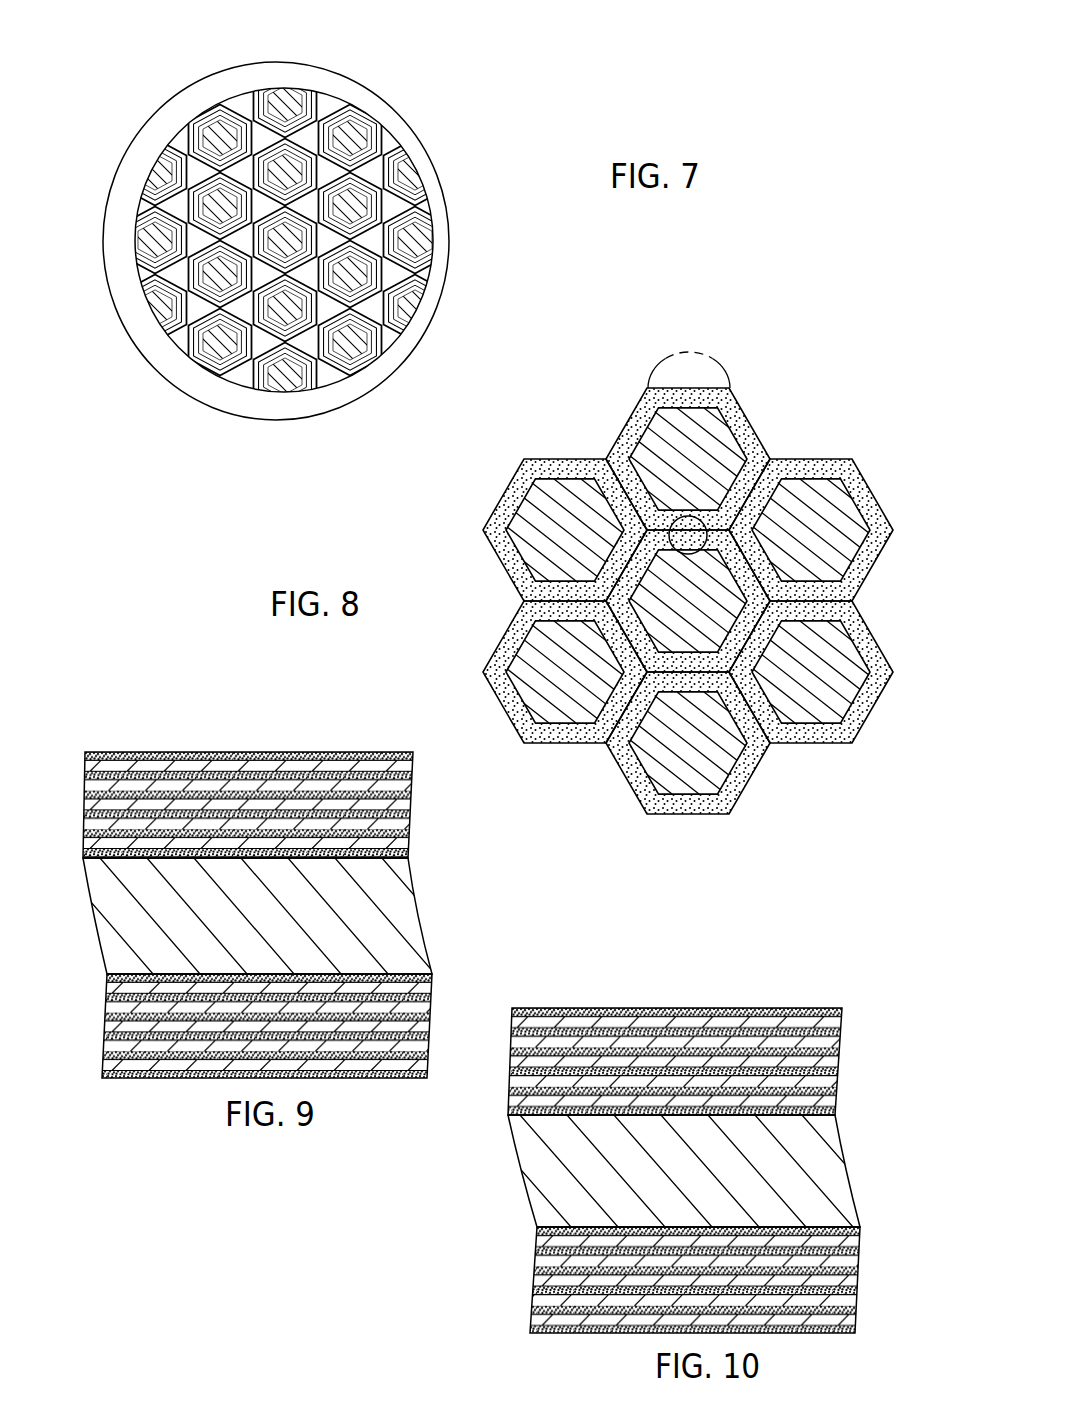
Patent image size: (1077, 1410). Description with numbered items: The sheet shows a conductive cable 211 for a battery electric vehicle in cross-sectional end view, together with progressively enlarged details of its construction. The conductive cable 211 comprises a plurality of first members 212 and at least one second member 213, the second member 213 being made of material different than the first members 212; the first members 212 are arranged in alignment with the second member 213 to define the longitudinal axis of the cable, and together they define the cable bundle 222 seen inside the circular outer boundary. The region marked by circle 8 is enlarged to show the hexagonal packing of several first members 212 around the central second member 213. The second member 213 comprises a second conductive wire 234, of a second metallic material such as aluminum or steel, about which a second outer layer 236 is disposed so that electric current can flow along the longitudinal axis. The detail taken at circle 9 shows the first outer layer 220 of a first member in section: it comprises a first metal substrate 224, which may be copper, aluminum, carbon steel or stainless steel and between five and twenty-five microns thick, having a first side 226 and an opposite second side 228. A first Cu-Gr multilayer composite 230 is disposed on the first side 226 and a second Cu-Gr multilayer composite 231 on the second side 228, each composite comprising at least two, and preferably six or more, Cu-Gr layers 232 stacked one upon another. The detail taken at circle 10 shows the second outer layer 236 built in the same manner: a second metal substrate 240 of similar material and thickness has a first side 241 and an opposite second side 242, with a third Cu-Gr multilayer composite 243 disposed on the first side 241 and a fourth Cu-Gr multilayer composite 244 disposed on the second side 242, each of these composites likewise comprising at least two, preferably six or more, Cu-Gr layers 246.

In FIG. 7, the conductive cable 211 is at (133, 98).
In FIG. 7, the second conductive wire 234 is at (296, 80).
In FIG. 7, the circle 8 is at (339, 95).
In FIG. 7, the cable bundle 222 is at (435, 230).
In FIG. 8, the cable bundle 222 is at (560, 398).
In FIG. 7, the first outer layer 220 is at (200, 184).
In FIG. 8, the first outer layer 220 is at (624, 410).
In FIG. 9, the first outer layer 220 is at (121, 728).
In FIG. 7, the first members 212 is at (345, 200).
In FIG. 8, the first members 212 is at (553, 527).
In FIG. 7, the second member 213 is at (300, 252).
In FIG. 8, the second member 213 is at (699, 611).
In FIG. 7, the second outer layer 236 is at (285, 268).
In FIG. 8, the second outer layer 236 is at (632, 575).
In FIG. 10, the second outer layer 236 is at (783, 960).
In FIG. 8, the circle 9 is at (700, 356).
In FIG. 8, the circle 10' 10 is at (689, 516).
In FIG. 9, the first Cu-Gr multilayer composite 230 is at (74, 745).
In FIG. 9, the Cu-Gr layers 232 is at (413, 840).
In FIG. 9, the first side 226 is at (103, 857).
In FIG. 9, the first metal substrate 224 is at (118, 917).
In FIG. 9, the second side 228 is at (113, 970).
In FIG. 9, the second Cu-Gr multilayer composite 231 is at (92, 972).
In FIG. 10, the third Cu-Gr multilayer composite 243 is at (500, 1000).
In FIG. 10, the Cu-Gr layers 246 is at (838, 1095).
In FIG. 10, the first side 241 is at (526, 1116).
In FIG. 10, the second metal substrate 240 is at (547, 1170).
In FIG. 10, the second side 242 is at (542, 1226).
In FIG. 10, the fourth Cu-Gr multilayer composite 244 is at (520, 1227).